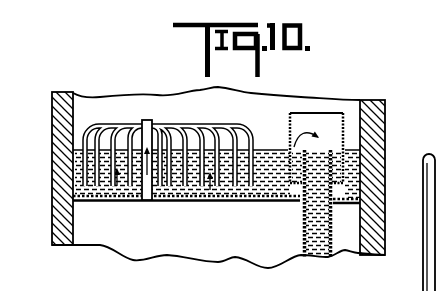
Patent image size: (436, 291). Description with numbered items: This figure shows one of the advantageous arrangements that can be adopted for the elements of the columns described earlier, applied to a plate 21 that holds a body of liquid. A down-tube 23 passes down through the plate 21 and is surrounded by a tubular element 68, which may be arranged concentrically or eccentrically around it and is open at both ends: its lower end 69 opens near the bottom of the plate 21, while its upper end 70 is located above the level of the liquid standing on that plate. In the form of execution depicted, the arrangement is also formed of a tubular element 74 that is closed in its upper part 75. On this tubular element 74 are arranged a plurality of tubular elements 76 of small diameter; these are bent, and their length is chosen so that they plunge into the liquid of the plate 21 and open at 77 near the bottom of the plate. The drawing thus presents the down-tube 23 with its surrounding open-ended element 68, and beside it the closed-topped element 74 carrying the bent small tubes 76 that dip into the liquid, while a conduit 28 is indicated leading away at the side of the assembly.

The plate 21 is at (220, 200).
The down-tube 23 is at (293, 204).
The conduit 28 is at (385, 115).
The tubular element 68 is at (356, 100).
The lower end 69 is at (296, 183).
The upper end 70 is at (306, 113).
The tubular element 74 is at (143, 200).
The upper part 75 is at (143, 124).
The tubular elements 76 is at (194, 124).
The opening 77 is at (172, 197).